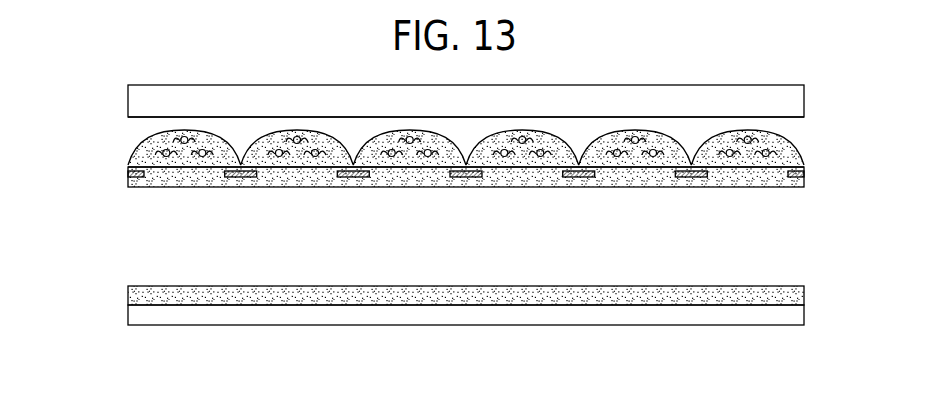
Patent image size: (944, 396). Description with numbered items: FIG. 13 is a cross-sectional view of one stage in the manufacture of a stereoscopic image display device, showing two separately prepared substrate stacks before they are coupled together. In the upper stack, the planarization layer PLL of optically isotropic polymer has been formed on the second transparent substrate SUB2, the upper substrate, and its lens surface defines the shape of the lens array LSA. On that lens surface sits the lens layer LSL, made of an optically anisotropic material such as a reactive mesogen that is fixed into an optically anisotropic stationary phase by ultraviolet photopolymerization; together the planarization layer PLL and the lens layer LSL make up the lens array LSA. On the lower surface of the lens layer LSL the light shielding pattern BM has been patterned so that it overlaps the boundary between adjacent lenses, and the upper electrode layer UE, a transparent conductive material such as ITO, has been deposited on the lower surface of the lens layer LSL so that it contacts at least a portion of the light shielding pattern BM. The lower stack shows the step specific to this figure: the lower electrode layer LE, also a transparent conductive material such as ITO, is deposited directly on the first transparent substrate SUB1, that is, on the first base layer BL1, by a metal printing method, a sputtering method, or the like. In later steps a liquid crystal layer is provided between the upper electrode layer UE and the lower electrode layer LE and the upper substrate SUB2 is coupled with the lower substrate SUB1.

The second transparent substrate SUB2 is at (795, 103).
The lens array LSA is at (421, 142).
The planarization layer PLL is at (135, 127).
The lens layer LSL is at (134, 153).
The light shielding pattern BM is at (128, 174).
The upper electrode layer UE is at (800, 183).
The lower electrode layer LE is at (797, 296).
The first base layer BL1 is at (499, 328).
The first transparent substrate SUB1 is at (795, 313).